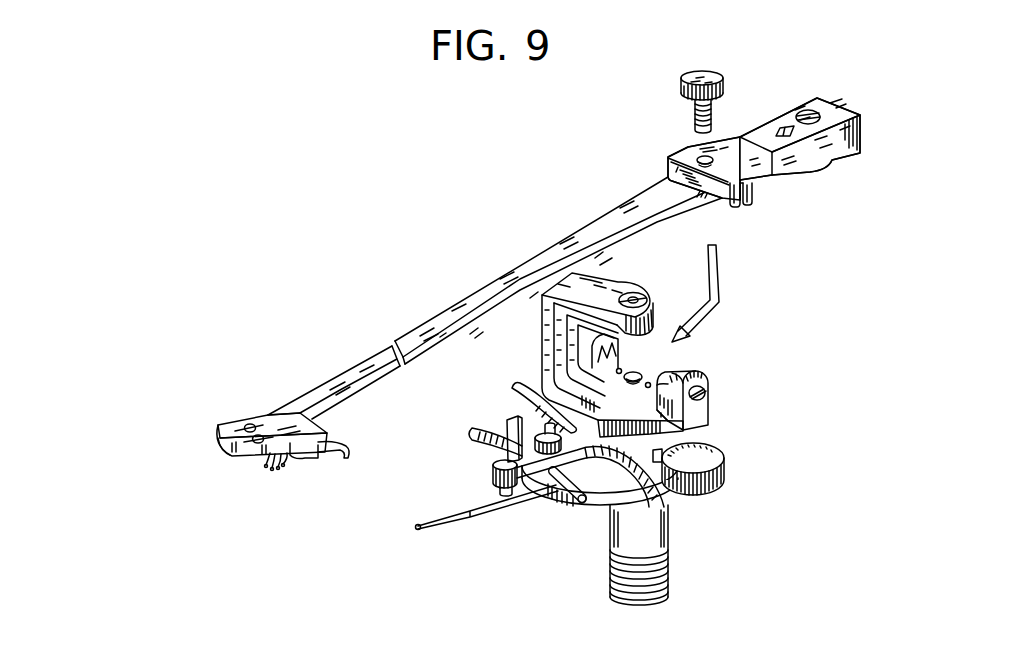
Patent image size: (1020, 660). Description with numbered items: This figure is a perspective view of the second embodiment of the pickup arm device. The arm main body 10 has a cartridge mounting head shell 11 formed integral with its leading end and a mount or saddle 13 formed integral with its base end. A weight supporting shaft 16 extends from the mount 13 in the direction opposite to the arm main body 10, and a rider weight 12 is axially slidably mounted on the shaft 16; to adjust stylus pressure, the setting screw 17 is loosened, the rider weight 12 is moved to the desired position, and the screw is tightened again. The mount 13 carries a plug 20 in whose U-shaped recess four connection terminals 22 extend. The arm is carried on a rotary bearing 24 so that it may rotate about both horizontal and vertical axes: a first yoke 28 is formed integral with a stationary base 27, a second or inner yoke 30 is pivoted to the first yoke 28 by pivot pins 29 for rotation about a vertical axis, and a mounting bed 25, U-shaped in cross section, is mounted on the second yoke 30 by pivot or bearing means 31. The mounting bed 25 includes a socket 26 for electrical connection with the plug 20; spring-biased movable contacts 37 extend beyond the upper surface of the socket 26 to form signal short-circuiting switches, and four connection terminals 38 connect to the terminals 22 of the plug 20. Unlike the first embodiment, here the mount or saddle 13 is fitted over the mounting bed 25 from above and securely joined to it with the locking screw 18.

The arm main body 10 is at (438, 318).
The cartridge mounting head shell 11 is at (292, 418).
The rider weight 12 is at (836, 102).
The mount or saddle 13 is at (754, 179).
The weight supporting shaft 16 is at (738, 142).
The setting screw 17 is at (803, 109).
The locking screw 18 is at (703, 70).
The plug 20 is at (732, 197).
The connection terminals 22 is at (746, 203).
The rotary bearing 24 is at (620, 352).
The mounting bed 25 is at (695, 371).
The socket 26 is at (648, 365).
The stationary base 27 is at (652, 470).
The first yoke 28 is at (595, 273).
The pivot pins 29 is at (638, 295).
The second or inner yoke 30 is at (712, 412).
The pivot or bearing means 31 is at (707, 395).
The movable contacts 37 is at (645, 388).
The connection terminals 38 is at (614, 357).